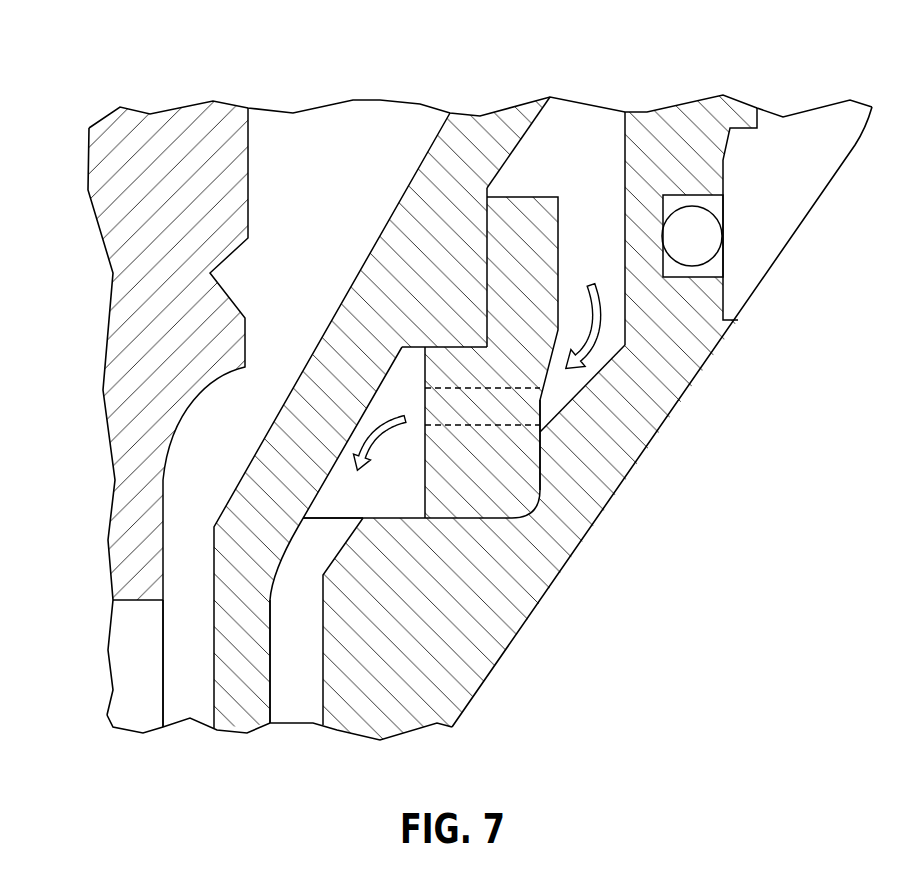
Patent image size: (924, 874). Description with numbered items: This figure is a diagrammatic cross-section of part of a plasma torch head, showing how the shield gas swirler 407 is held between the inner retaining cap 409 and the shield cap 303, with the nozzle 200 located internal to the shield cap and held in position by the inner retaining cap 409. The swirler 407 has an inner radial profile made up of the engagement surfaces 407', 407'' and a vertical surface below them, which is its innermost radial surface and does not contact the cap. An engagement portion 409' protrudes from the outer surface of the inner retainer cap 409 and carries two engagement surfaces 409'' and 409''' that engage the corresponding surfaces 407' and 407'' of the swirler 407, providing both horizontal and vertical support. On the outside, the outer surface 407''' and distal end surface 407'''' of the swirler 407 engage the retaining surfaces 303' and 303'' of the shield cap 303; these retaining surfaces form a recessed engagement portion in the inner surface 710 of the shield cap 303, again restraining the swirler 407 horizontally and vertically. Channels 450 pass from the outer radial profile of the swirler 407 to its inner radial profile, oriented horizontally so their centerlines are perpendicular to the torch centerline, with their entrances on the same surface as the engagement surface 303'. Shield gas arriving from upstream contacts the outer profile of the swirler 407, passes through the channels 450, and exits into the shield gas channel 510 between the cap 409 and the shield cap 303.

The nozzle 200 is at (157, 168).
The shield cap 303 is at (480, 417).
The shield cap retaining surface 303' is at (618, 463).
The shield cap retaining surface 303'' is at (470, 600).
The shield gas swirler 407 is at (562, 357).
The engagement surface 407' is at (642, 194).
The engagement surface 407'' is at (674, 386).
The outer surface 407''' is at (287, 424).
The distal end surface 407'''' is at (247, 603).
The inner retaining cap 409 is at (391, 371).
The engagement portion 409' is at (563, 146).
The engagement surface 409'' is at (462, 192).
The engagement surface 409''' is at (419, 186).
The channels 450 is at (533, 409).
The shield gas channel 510 is at (315, 550).
The inner surface 710 is at (478, 347).